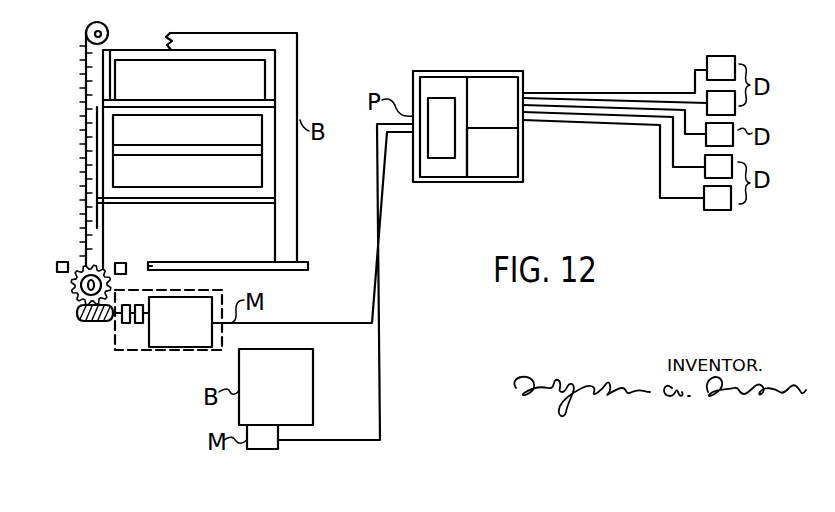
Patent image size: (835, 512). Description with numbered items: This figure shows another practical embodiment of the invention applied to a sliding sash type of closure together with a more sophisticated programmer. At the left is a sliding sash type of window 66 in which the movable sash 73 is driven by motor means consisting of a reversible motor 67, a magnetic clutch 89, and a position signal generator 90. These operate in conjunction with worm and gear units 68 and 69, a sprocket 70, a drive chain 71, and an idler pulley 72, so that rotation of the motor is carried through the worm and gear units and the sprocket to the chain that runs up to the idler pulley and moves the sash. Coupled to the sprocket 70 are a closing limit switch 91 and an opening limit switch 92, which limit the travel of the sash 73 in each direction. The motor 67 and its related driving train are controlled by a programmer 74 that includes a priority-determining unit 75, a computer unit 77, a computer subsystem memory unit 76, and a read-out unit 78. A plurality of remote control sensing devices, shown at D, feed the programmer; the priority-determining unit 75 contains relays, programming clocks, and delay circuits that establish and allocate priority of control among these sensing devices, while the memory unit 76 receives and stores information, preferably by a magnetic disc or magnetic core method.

The sliding sash type of window 66 is at (284, 62).
The reversible motor 67 is at (165, 340).
The worm and gear unit 68 is at (77, 322).
The worm and gear unit 69 is at (70, 291).
The sprocket 70 is at (113, 281).
The drive chain 71 is at (82, 184).
The idler pulley 72 is at (86, 26).
The movable sash 73 is at (143, 107).
The programmer 74 is at (480, 51).
The priority-determining unit 75 is at (500, 90).
The computer subsystem memory unit 76 is at (440, 115).
The computer unit 77 is at (452, 170).
The read-out unit 78 is at (510, 163).
The magnetic clutch 89 is at (143, 330).
The position signal generator 90 is at (117, 330).
The closing limit switch 91 is at (118, 262).
The opening limit switch 92 is at (56, 264).